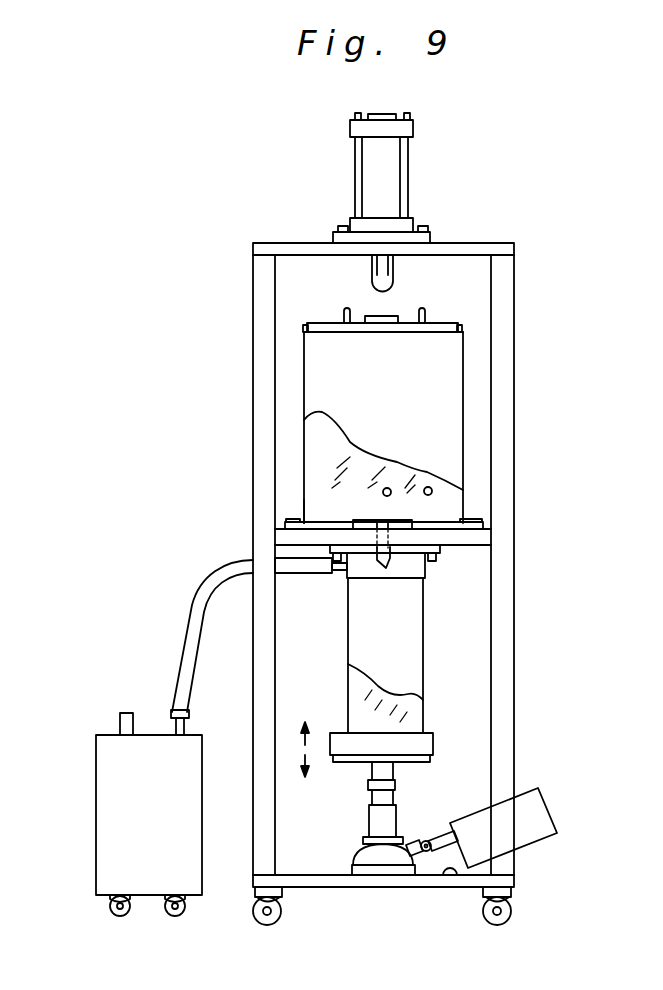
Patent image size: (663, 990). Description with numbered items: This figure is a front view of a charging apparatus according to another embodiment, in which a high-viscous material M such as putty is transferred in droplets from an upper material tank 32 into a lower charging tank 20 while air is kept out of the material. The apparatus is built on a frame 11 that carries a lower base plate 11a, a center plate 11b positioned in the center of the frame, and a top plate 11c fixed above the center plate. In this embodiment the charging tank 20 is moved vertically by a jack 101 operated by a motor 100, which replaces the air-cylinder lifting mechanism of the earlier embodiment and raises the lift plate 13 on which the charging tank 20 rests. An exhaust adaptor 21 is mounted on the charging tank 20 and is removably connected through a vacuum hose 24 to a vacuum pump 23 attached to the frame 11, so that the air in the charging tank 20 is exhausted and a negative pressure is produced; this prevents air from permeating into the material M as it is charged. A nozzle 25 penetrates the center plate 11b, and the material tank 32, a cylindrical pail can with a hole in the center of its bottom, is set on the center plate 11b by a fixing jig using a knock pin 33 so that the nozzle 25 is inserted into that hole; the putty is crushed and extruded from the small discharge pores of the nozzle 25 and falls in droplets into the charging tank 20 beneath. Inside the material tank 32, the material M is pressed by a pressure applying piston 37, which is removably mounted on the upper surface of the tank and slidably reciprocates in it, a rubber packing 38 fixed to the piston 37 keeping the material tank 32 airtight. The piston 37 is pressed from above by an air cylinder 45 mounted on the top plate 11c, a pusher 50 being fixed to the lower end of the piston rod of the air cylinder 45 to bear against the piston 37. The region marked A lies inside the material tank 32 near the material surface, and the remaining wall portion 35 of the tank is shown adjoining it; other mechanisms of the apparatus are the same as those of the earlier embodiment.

The frame 11 is at (262, 280).
The lower base plate 11a is at (455, 887).
The center plate 11b is at (473, 539).
The top plate 11c is at (280, 243).
The lift plate 13 is at (422, 744).
The charging tank 20 is at (405, 660).
The exhaust adaptor 21 is at (425, 565).
The vacuum pump 23 is at (112, 795).
The vacuum hose 24 is at (195, 610).
The nozzle 25 is at (392, 548).
The material tank 32 is at (433, 445).
The knock pin 33 is at (283, 526).
The container wall 35 is at (345, 510).
The pressure applying piston 37 is at (438, 318).
The rubber packing 38 is at (457, 325).
The air cylinder 45 is at (385, 172).
The pusher 50 is at (390, 278).
The motor 100 is at (527, 815).
The jack 101 is at (378, 826).
The high-viscous material M is at (333, 455).
The air bubbles A is at (437, 482).